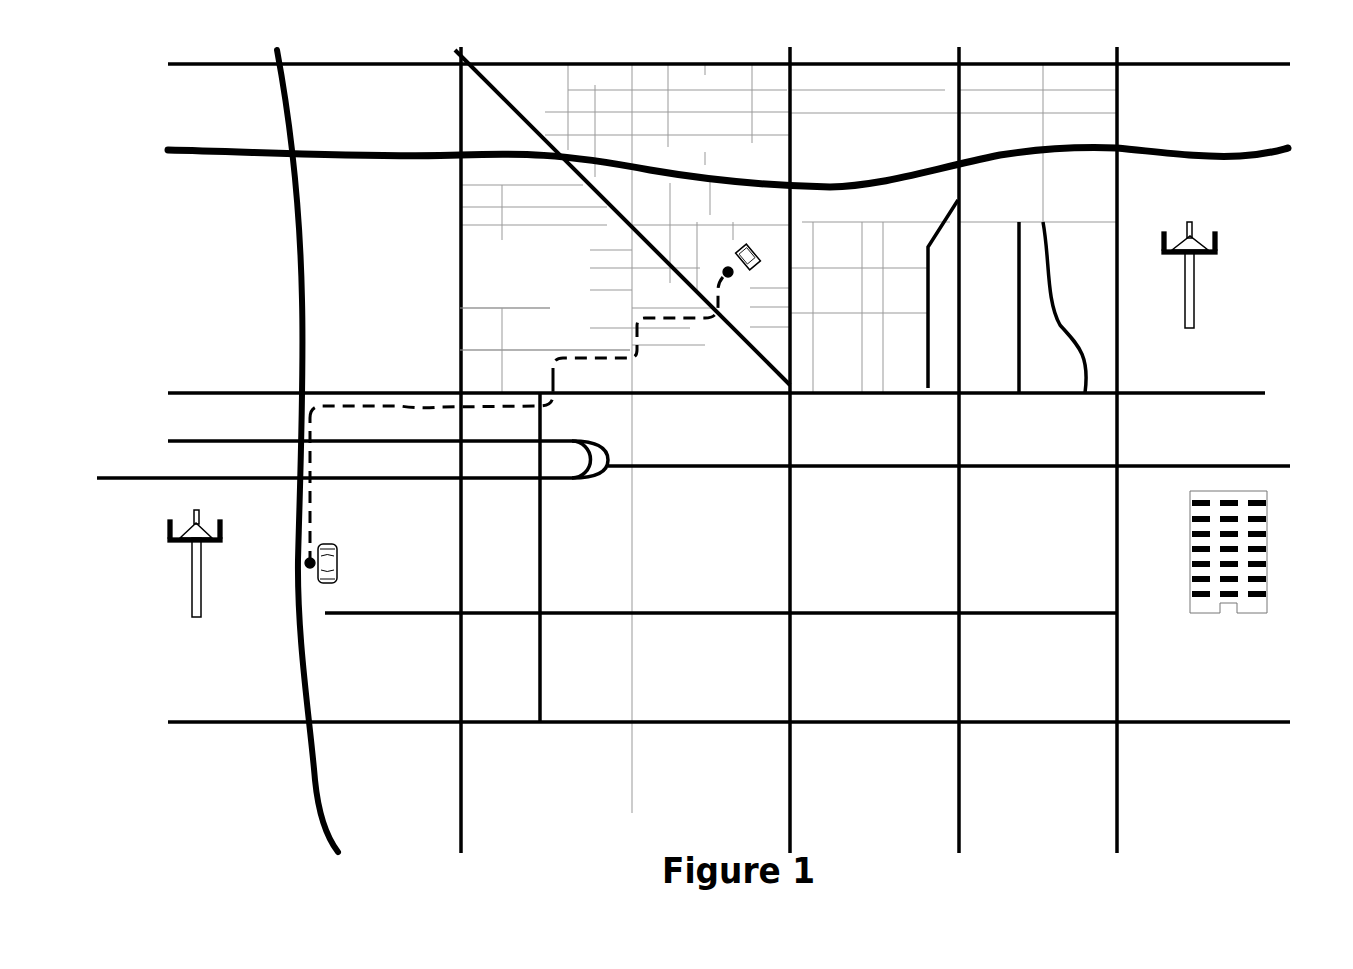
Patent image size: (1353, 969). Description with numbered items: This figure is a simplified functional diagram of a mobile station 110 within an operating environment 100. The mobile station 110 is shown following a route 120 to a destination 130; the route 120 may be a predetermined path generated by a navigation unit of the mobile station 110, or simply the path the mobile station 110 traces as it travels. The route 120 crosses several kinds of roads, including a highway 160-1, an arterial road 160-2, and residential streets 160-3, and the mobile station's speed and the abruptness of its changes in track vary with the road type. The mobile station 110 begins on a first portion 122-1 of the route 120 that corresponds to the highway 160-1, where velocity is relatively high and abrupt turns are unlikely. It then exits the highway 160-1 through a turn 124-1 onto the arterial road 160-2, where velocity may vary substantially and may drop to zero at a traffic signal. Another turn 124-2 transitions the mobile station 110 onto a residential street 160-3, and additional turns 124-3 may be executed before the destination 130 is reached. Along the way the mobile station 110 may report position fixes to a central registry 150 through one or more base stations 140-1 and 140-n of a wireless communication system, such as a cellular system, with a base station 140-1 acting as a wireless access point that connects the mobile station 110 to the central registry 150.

The operating environment 100 is at (150, 211).
The mobile station 110 is at (345, 577).
The route 120 is at (519, 417).
The first portion 122-1 is at (312, 527).
The turn 124-1 is at (314, 414).
The turn 124-2 is at (577, 412).
The additional turns 124-3 is at (636, 362).
The destination 130 is at (757, 257).
The base station 140-1 is at (178, 611).
The base station 140-n is at (1202, 296).
The central registry 150 is at (1300, 528).
The highway 160-1 is at (297, 345).
The arterial road 160-2 is at (1215, 393).
The residential street 160-3 is at (549, 296).